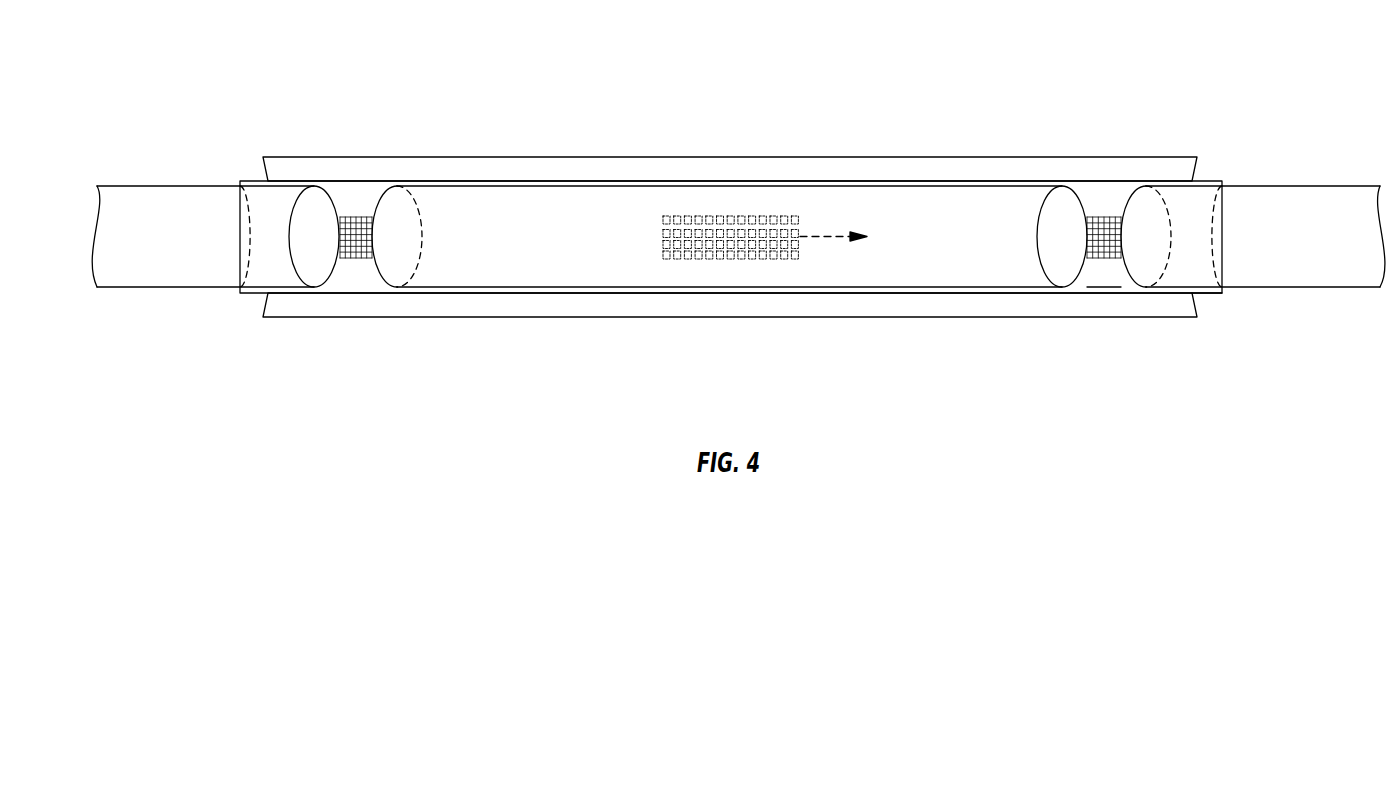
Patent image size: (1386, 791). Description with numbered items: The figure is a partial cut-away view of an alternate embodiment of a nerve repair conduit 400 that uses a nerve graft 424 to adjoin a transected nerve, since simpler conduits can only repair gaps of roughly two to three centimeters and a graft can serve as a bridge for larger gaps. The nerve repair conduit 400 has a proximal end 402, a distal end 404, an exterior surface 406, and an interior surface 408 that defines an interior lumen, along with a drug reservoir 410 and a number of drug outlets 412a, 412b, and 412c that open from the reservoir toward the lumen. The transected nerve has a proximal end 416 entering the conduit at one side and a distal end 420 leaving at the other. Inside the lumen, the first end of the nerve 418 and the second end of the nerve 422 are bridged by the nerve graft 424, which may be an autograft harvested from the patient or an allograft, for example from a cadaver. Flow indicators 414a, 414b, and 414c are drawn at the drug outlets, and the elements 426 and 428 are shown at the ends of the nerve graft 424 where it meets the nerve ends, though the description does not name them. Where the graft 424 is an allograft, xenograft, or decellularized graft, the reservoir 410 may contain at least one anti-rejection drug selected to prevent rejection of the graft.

The nerve repair conduit 400 is at (814, 86).
The proximal end 402 is at (253, 180).
The distal end 404 is at (1222, 181).
The exterior surface 406 is at (1212, 297).
The interior surface 408 is at (1105, 282).
The drug reservoir 410 is at (900, 175).
The drug outlet 412a is at (353, 216).
The drug outlet 412b is at (1100, 230).
The drug outlet 412c is at (720, 216).
The first flow direction 414a is at (356, 268).
The second flow direction 414b is at (1107, 202).
The third flow direction 414c is at (833, 242).
The proximal end of the transected nerve 416 is at (158, 258).
The first end of the nerve 418 is at (313, 258).
The distal end of the transected nerve 420 is at (1318, 192).
The second end of the nerve 422 is at (1145, 258).
The nerve graft 424 is at (553, 258).
The first inner cap 426 is at (400, 210).
The second inner cap 428 is at (1067, 258).